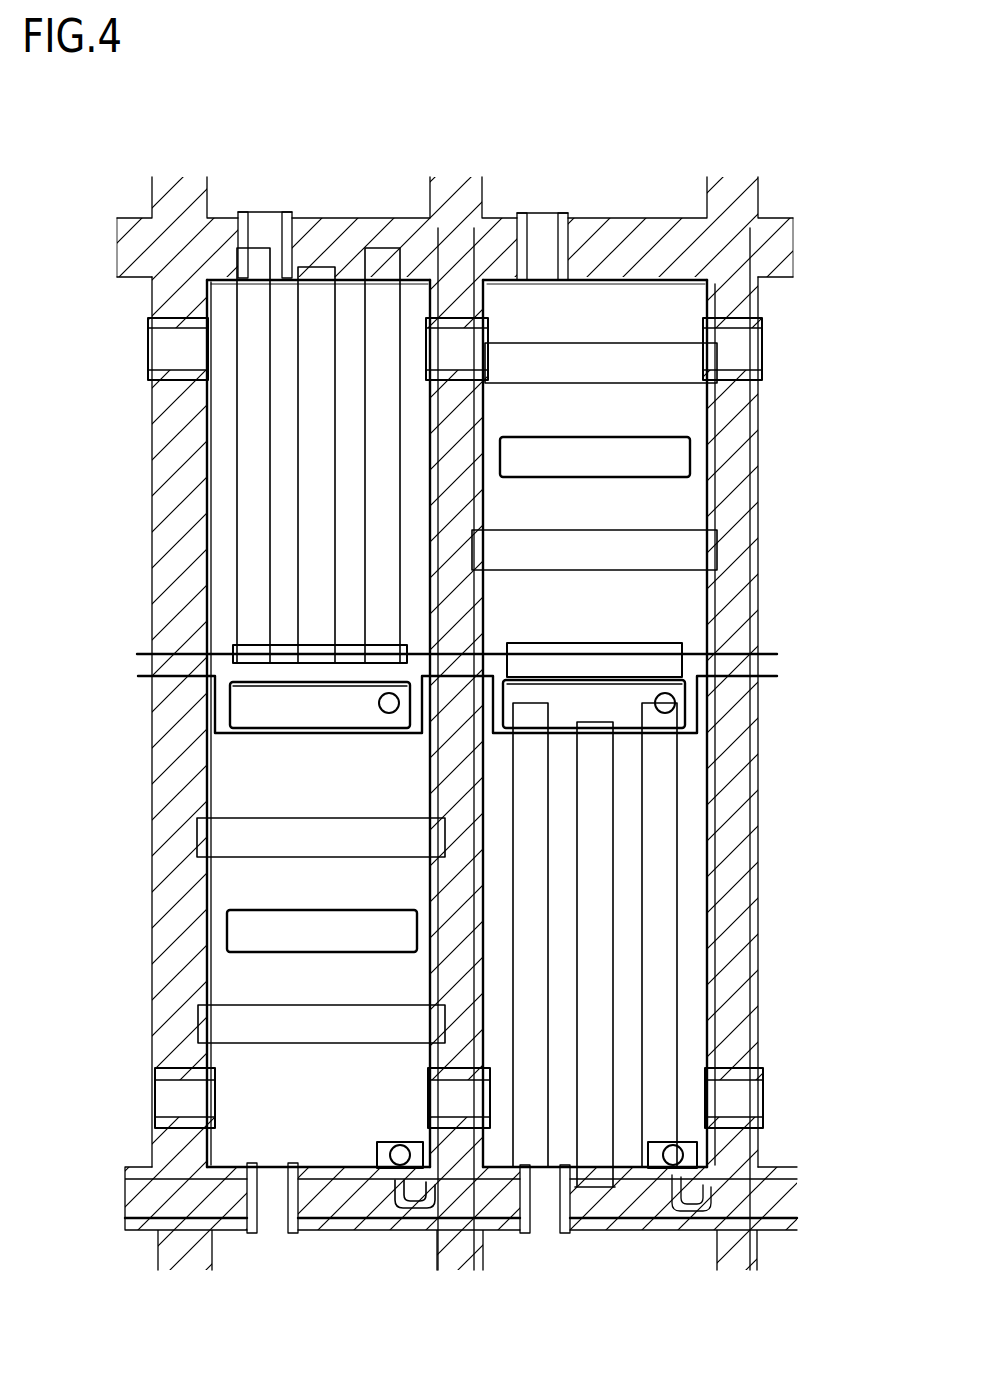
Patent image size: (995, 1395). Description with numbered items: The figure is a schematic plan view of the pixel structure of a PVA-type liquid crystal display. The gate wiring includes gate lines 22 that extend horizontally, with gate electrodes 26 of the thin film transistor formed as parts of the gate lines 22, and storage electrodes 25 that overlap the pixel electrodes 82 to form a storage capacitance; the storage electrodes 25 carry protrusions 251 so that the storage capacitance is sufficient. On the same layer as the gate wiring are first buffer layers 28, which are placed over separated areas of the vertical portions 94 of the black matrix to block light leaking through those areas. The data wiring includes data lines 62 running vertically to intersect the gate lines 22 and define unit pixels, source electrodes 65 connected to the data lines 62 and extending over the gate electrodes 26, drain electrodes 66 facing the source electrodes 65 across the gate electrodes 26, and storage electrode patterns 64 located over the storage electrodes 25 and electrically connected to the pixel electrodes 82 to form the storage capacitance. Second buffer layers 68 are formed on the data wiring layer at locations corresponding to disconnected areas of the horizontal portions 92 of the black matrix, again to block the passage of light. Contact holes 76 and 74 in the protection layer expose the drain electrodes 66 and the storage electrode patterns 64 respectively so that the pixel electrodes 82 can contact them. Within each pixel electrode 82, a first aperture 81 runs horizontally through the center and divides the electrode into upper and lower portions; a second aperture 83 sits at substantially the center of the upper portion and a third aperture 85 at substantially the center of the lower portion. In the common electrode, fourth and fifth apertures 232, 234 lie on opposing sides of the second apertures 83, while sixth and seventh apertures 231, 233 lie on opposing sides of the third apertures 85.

The gate line 22 is at (195, 1210).
The storage electrode 25 is at (146, 663).
The gate electrode 26 is at (377, 1197).
The first buffer layer 28 is at (155, 350).
The data line 62 is at (755, 737).
The storage electrode pattern 64 is at (328, 697).
The source electrode 65 is at (395, 1227).
The drain electrode 66 is at (390, 1140).
The second buffer layer 68 is at (547, 225).
The contact hole 74 is at (390, 683).
The contact hole 76 is at (377, 1152).
The first aperture 81 is at (570, 642).
The pixel electrode 82 is at (707, 605).
The second aperture 83 is at (320, 293).
The third aperture 85 is at (237, 930).
The horizontal portion of black matrix 92 is at (310, 225).
The vertical portion of black matrix 94 is at (165, 437).
The sixth aperture 231 is at (215, 840).
The fourth aperture 232 is at (252, 297).
The seventh aperture 233 is at (232, 1027).
The fifth aperture 234 is at (383, 297).
The protrusion 251 is at (224, 714).